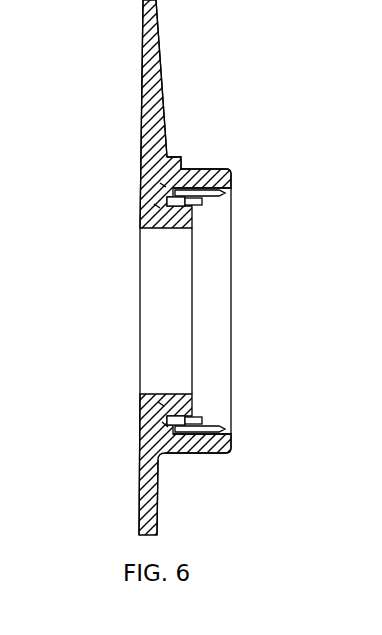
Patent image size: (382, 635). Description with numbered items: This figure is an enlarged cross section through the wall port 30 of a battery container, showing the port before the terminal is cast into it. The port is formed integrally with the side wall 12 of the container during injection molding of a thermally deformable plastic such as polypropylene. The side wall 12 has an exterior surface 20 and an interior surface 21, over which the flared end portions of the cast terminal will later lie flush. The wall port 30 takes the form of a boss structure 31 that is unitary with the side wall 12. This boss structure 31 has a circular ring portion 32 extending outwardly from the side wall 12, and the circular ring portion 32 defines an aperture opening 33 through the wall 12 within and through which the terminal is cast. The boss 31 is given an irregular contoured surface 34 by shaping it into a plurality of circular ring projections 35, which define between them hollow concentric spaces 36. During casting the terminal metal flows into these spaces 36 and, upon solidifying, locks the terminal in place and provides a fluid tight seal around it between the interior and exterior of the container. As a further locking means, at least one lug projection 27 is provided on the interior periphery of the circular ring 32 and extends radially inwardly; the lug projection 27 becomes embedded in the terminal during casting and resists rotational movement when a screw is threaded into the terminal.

The side wall 12 is at (161, 42).
The exterior surface 20 is at (163, 100).
The interior surface 21 is at (142, 78).
The lug projection 27 is at (190, 199).
The wall port 30 is at (246, 474).
The boss structure 31 is at (184, 166).
The circular ring portion 32 is at (225, 168).
The aperture opening 33 is at (177, 319).
The irregular contoured surface 34 is at (221, 189).
The circular ring projections 35 is at (163, 185).
The hollow concentric spaces 36 is at (205, 210).